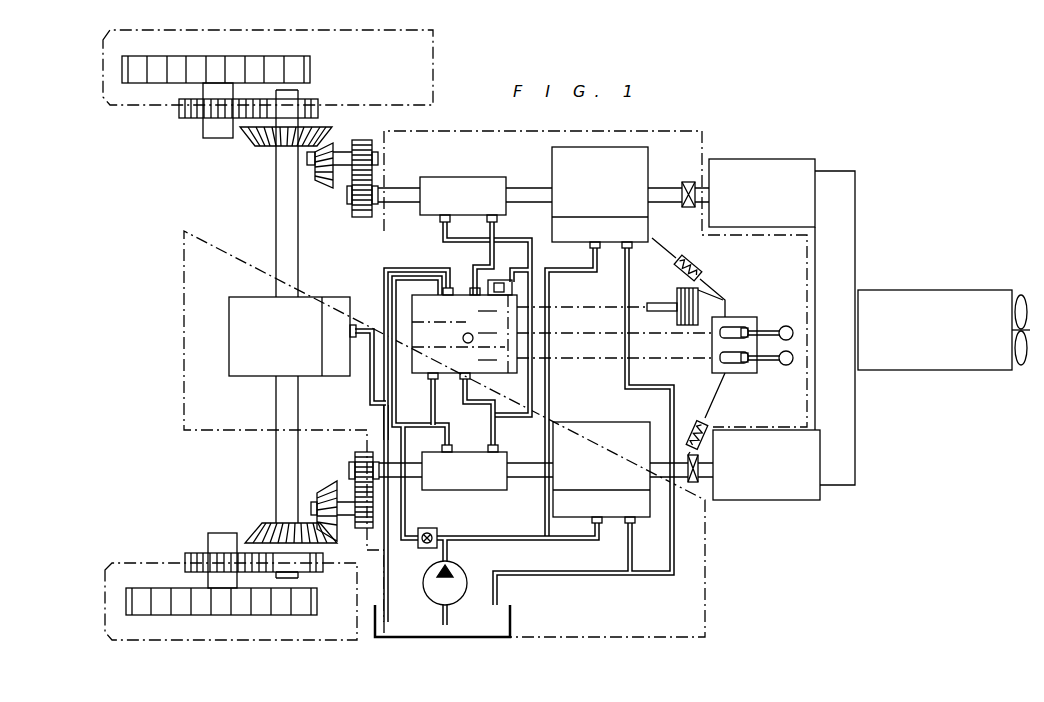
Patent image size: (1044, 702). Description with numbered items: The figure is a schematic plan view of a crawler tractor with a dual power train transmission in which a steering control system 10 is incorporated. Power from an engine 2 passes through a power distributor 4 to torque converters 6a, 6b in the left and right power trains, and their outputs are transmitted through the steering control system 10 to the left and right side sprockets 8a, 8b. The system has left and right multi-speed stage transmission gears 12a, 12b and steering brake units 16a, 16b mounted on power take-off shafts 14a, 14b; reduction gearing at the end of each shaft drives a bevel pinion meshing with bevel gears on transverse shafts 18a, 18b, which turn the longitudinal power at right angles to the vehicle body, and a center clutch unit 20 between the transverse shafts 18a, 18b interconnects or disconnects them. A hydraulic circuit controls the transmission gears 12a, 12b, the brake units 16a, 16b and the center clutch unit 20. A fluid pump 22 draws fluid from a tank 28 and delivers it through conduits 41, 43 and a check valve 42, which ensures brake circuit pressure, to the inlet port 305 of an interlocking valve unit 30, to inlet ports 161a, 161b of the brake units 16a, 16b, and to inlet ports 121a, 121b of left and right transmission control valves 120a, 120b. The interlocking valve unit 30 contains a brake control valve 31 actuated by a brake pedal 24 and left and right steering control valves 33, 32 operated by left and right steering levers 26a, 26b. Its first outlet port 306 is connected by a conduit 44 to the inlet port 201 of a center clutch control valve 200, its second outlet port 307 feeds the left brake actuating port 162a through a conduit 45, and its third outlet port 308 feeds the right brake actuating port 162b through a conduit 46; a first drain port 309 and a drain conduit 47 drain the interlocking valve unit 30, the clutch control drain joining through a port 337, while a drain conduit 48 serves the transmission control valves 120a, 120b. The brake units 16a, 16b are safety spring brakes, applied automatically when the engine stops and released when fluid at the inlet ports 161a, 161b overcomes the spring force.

The engine 2 is at (928, 291).
The power distributor 4 is at (855, 246).
The torque converter 6a is at (772, 166).
The torque converter 6b is at (762, 500).
The left side sprocket 8a is at (306, 56).
The right side sprocket 8b is at (308, 615).
The steering control system 10 is at (705, 136).
The left multi-speed stage transmission gear 12a is at (648, 157).
The right multi-speed stage transmission gear 12b is at (608, 424).
The power take-off shaft 14a is at (524, 187).
The power take-off shaft 14b is at (528, 462).
The left steering brake unit 16a is at (476, 177).
The right steering brake unit 16b is at (440, 489).
The transverse shaft 18a is at (299, 268).
The transverse shaft 18b is at (277, 405).
The center clutch unit 20 is at (250, 300).
The fluid pump 22 is at (455, 602).
The brake pedal 24 is at (700, 280).
The left steering lever 26a is at (778, 326).
The right steering lever 26b is at (781, 366).
The tank 28 is at (512, 621).
The interlocking valve unit 30 is at (497, 335).
The brake control valve 31 is at (488, 303).
The right steering control valve 32 is at (488, 352).
The left steering control valve 33 is at (488, 325).
The conduit 41 is at (403, 500).
The check valve 42 is at (420, 550).
The conduit 43 is at (555, 542).
The conduit 44 is at (371, 390).
The conduit 45 is at (492, 262).
The conduit 46 is at (550, 402).
The drain conduit 47 is at (384, 421).
The drain conduit 48 is at (675, 396).
The left transmission control valve 120a is at (630, 248).
The right transmission control valve 120b is at (636, 524).
The inlet port 121a is at (592, 248).
The inlet port 121b is at (600, 526).
The inlet port 161a is at (440, 222).
The inlet port 161b is at (444, 446).
The left brake actuating port 162a is at (497, 222).
The right brake actuating port 162b is at (492, 446).
The center clutch control valve 200 is at (322, 378).
The inlet port 201 is at (357, 322).
The inlet port 305 is at (433, 385).
The first outlet port 306 is at (468, 384).
The second outlet port 307 is at (470, 280).
The third outlet port 308 is at (506, 282).
The first drain port 309 is at (440, 290).
The port 337 is at (462, 334).